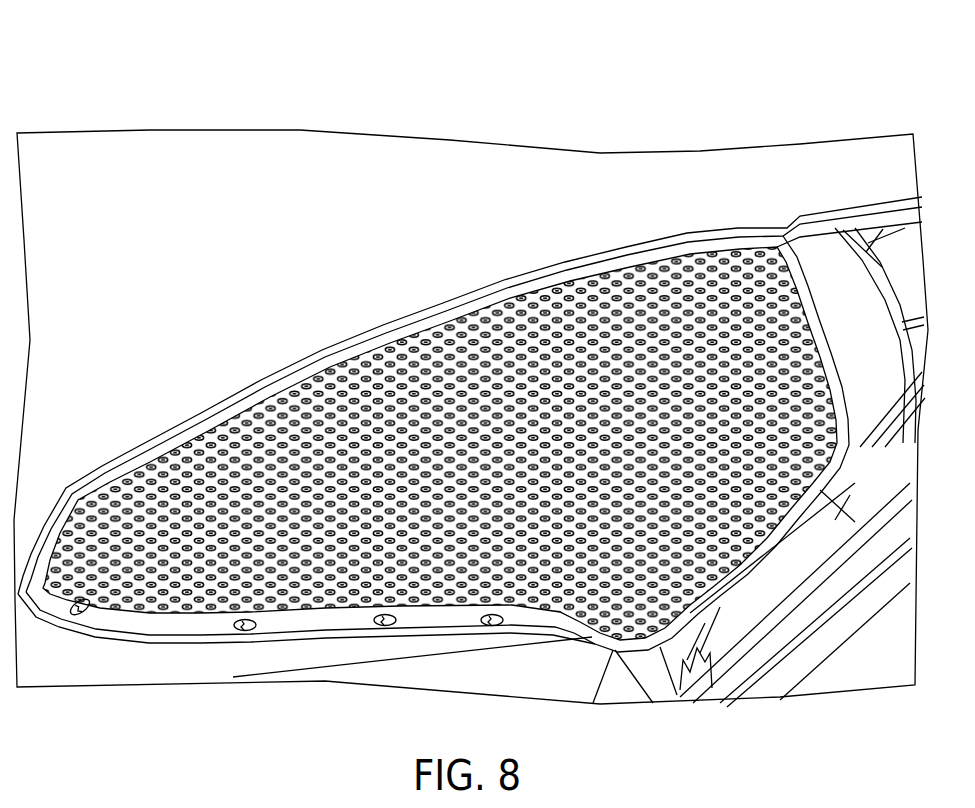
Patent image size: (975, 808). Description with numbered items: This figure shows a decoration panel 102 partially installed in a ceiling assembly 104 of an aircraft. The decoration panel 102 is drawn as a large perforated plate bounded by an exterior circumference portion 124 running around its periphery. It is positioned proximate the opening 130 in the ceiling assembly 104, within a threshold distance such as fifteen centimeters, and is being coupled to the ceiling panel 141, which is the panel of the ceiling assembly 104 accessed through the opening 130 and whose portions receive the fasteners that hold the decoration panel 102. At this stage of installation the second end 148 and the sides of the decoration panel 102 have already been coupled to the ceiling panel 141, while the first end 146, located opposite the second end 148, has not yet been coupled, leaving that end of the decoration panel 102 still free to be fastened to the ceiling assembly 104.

The decoration panel 102 is at (323, 410).
The ceiling assembly 104 is at (571, 192).
The exterior circumference portion 124 is at (458, 312).
The opening 130 is at (172, 577).
The ceiling panel 141 is at (810, 262).
The first end 146 is at (677, 590).
The second end 148 is at (120, 526).